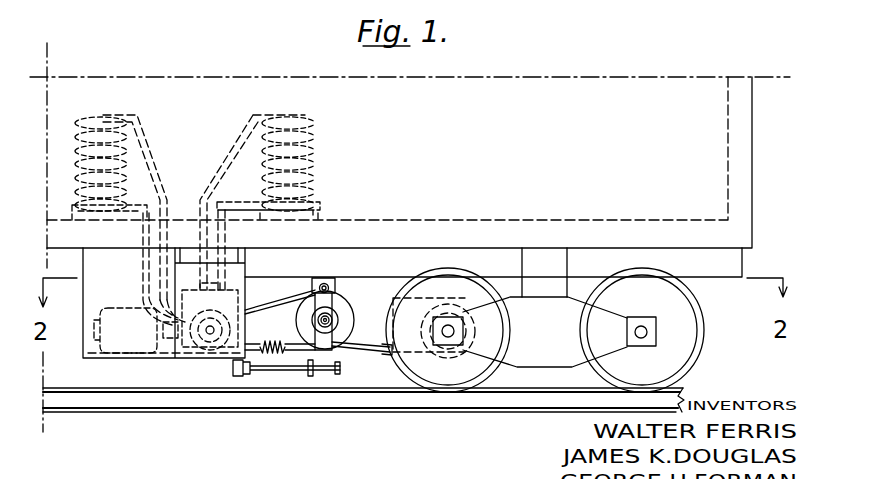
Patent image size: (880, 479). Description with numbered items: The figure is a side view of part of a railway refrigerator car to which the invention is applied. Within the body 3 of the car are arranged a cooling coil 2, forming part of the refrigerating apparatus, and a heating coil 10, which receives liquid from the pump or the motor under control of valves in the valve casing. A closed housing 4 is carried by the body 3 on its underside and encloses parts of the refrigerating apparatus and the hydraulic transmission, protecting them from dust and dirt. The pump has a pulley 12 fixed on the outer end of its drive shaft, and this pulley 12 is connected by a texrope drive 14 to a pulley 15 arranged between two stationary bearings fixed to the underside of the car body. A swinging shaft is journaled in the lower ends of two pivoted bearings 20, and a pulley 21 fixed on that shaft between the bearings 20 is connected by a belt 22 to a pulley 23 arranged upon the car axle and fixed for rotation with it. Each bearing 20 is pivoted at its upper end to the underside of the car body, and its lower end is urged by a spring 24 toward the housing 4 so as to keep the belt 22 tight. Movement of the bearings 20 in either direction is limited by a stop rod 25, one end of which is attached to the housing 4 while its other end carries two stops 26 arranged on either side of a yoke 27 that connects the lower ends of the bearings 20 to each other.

The cooling coil 2 is at (103, 117).
The body 3 is at (742, 146).
The closed housing 4 is at (89, 360).
The heating coil 10 is at (308, 118).
The pulley 12 is at (197, 358).
The texrope drive 14 is at (288, 301).
The pulley 15 is at (296, 321).
The pivoted bearings 20 is at (330, 283).
The pulley 21 is at (342, 323).
The belt 22 is at (384, 354).
The pulley 23 is at (452, 308).
The spring 24 is at (268, 358).
The stop rod 25 is at (255, 372).
The stops 26 is at (335, 375).
The yoke 27 is at (320, 378).